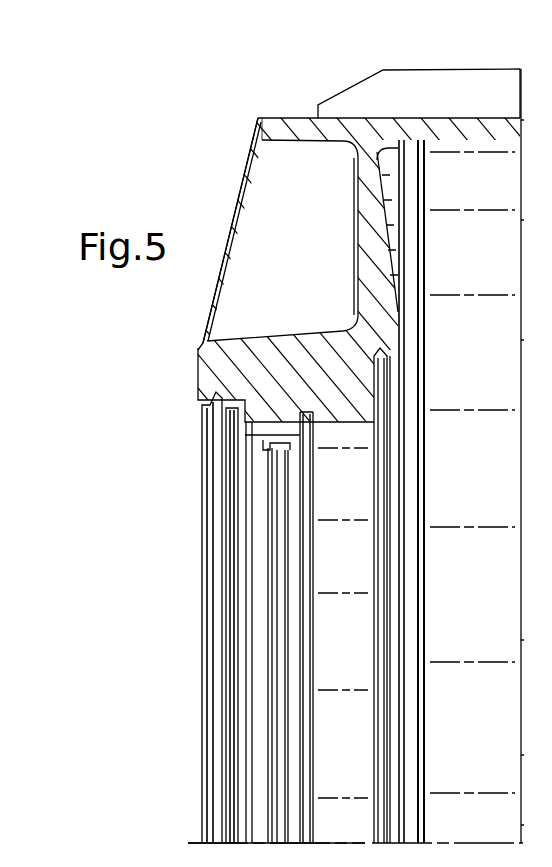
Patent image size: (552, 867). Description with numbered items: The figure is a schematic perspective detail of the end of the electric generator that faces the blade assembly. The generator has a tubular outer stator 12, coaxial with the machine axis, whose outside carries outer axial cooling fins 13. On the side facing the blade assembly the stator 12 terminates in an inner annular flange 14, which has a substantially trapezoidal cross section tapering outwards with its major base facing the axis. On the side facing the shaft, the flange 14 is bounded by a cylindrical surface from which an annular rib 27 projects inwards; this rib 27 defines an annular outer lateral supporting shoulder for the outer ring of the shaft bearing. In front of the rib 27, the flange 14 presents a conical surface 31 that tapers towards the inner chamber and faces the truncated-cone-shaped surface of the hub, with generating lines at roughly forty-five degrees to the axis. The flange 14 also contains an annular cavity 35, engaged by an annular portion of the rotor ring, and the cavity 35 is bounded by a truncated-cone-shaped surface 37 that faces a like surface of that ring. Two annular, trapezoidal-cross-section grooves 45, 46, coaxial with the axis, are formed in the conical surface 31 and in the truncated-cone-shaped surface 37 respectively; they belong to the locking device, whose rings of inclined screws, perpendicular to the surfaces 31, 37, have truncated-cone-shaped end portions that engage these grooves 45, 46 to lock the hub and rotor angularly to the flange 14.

The tubular outer stator 12 is at (372, 83).
The outer axial cooling fins 13 is at (375, 83).
The inner annular flange 14 is at (233, 238).
The annular rib 27 is at (277, 443).
The conical surface 31 is at (205, 402).
The annular cavity 35 is at (413, 407).
The truncated-cone-shaped surface 37 is at (398, 372).
The annular trapezoidal-cross-section groove 45 is at (212, 423).
The annular trapezoidal-cross-section groove 46 is at (388, 388).